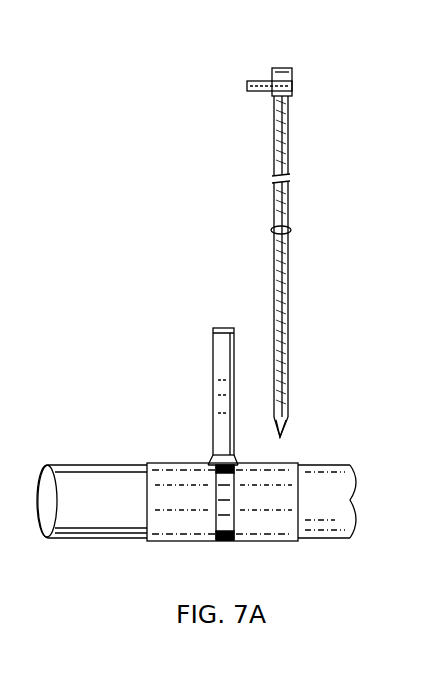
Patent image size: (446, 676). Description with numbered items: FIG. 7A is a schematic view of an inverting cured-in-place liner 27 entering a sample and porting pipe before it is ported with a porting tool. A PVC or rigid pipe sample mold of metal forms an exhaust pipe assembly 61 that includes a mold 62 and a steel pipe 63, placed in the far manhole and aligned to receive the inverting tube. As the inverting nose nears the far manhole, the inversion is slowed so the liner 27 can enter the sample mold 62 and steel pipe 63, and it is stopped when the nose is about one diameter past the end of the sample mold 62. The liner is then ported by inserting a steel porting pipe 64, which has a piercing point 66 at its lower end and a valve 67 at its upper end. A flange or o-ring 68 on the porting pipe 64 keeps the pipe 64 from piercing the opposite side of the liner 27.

The liner 27 is at (347, 540).
The exhaust pipe assembly 61 is at (160, 417).
The sample mold 62 is at (150, 541).
The steel pipe 63 is at (218, 372).
The steel porting pipe 64 is at (286, 250).
The piercing point 66 is at (286, 437).
The valve 67 is at (272, 82).
The flange or o-ring 68 is at (288, 226).